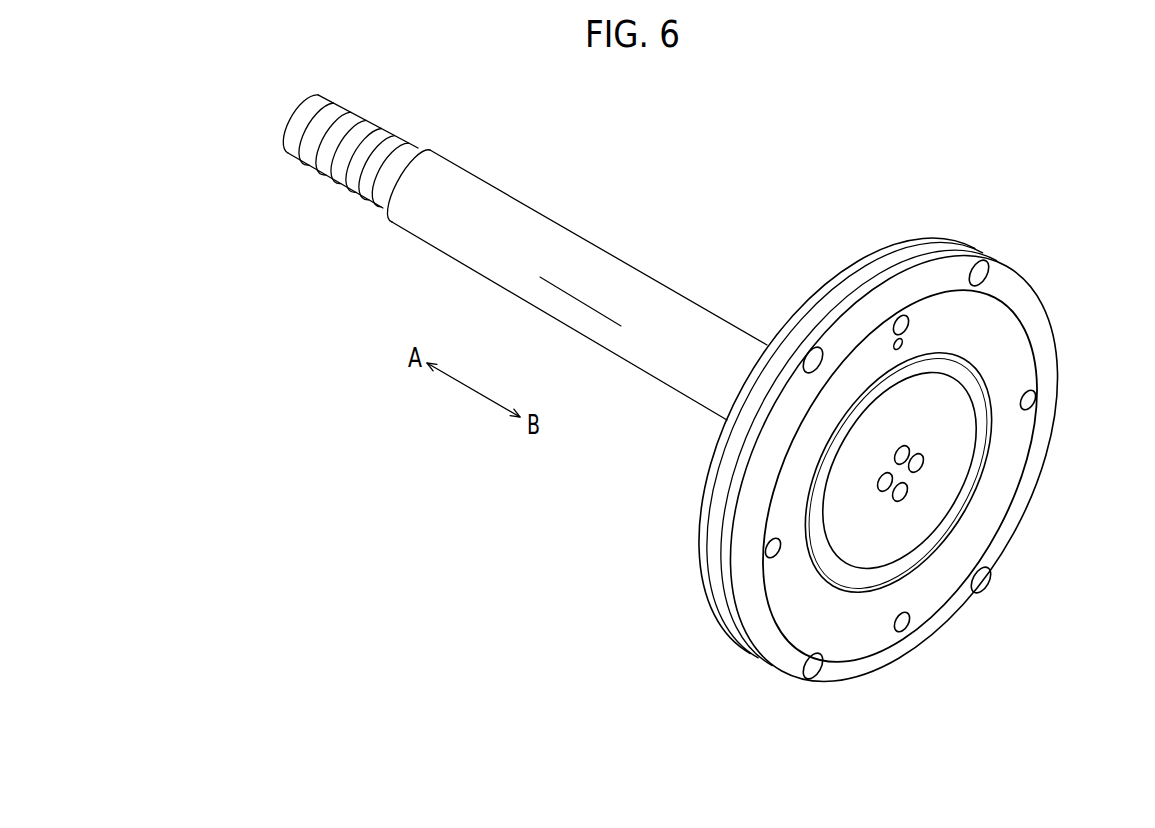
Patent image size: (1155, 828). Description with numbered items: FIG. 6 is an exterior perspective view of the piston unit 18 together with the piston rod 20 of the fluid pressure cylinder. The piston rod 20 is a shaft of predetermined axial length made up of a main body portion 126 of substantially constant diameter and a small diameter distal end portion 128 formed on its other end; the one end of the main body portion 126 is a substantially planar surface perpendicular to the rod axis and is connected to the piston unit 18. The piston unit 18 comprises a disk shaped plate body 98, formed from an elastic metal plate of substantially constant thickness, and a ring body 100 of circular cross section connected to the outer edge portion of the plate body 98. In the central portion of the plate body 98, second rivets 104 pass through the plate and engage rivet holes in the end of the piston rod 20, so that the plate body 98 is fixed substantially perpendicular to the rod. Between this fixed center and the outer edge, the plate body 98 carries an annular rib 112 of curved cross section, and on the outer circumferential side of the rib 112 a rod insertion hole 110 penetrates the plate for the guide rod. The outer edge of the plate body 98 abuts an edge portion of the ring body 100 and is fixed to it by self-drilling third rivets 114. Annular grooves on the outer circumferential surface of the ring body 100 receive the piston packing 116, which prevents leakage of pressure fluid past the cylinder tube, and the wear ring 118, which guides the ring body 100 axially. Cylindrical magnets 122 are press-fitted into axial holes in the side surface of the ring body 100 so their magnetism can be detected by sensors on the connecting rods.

The piston unit 18 is at (878, 460).
The piston rod 20 is at (520, 250).
The plate body 98 is at (865, 630).
The ring body 100 is at (813, 438).
The second rivets 104 is at (910, 488).
The rod insertion hole 110 is at (904, 344).
The rib 112 is at (824, 560).
The third rivets 114 is at (901, 315).
The piston packing 116 is at (855, 273).
The wear ring 118 is at (937, 252).
The magnets 122 is at (812, 352).
The main body portion 126 is at (497, 184).
The distal end portion 128 is at (357, 117).